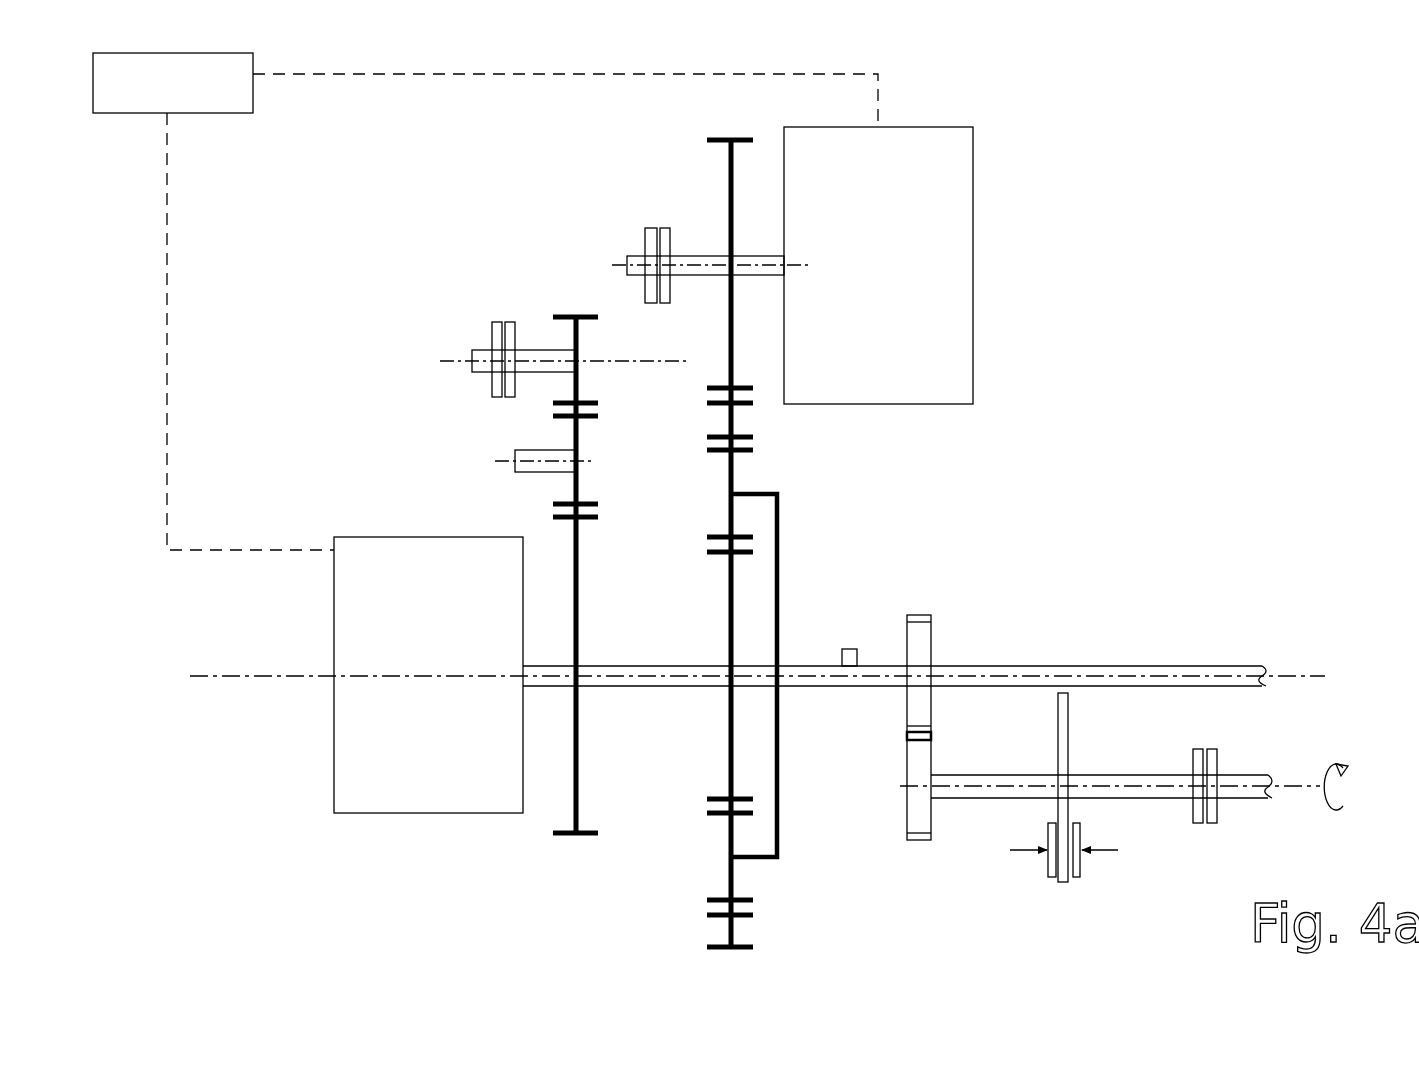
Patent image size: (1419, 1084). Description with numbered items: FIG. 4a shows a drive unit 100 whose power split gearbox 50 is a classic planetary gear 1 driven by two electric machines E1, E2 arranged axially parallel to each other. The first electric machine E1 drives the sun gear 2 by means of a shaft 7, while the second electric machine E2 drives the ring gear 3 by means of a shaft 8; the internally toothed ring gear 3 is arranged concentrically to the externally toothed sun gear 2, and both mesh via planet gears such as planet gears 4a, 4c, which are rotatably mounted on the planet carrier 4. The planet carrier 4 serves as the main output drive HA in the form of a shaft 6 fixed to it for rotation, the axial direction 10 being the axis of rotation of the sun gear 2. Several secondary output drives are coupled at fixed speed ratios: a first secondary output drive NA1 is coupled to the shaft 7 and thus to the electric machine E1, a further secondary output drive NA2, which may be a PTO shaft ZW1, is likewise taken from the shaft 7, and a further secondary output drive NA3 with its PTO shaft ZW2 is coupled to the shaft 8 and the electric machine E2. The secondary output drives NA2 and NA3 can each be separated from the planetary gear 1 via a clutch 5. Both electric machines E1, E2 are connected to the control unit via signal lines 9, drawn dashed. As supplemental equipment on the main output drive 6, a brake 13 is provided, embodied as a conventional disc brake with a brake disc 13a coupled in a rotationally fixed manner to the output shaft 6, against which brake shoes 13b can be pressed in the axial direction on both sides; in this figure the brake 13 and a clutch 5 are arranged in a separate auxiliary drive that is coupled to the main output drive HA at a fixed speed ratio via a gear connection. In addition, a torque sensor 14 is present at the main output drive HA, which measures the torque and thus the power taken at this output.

The drive unit 100 is at (1030, 121).
The signal lines 9 is at (428, 78).
The first electric machine E1 is at (428, 675).
The second electric machine E2 is at (878, 265).
The shaft 7 is at (549, 688).
The sun gear 2 is at (734, 612).
The ring gear 3 is at (735, 428).
The planet carrier 4 is at (780, 509).
The planet gear 4a is at (735, 478).
The planet gear 4c is at (734, 878).
The shaft 8 is at (763, 256).
The clutch 5 is at (535, 265).
The secondary output drive NA3 is at (809, 521).
The second intermediate shaft ZW2 is at (809, 521).
The secondary output drive NA2 is at (470, 361).
The PTO-shaft ZW1 is at (444, 361).
The first secondary output drive NA1 is at (456, 462).
The main output drive HA is at (757, 690).
The output shaft 6 is at (757, 645).
The axial direction 10 is at (273, 675).
The torque sensor 14 is at (848, 649).
The planetary gear 1 is at (1057, 788).
The power split gearbox 50 is at (766, 884).
The brake 13 is at (1064, 831).
The brake disc 13a is at (1063, 736).
The brake shoes 13b is at (1075, 846).